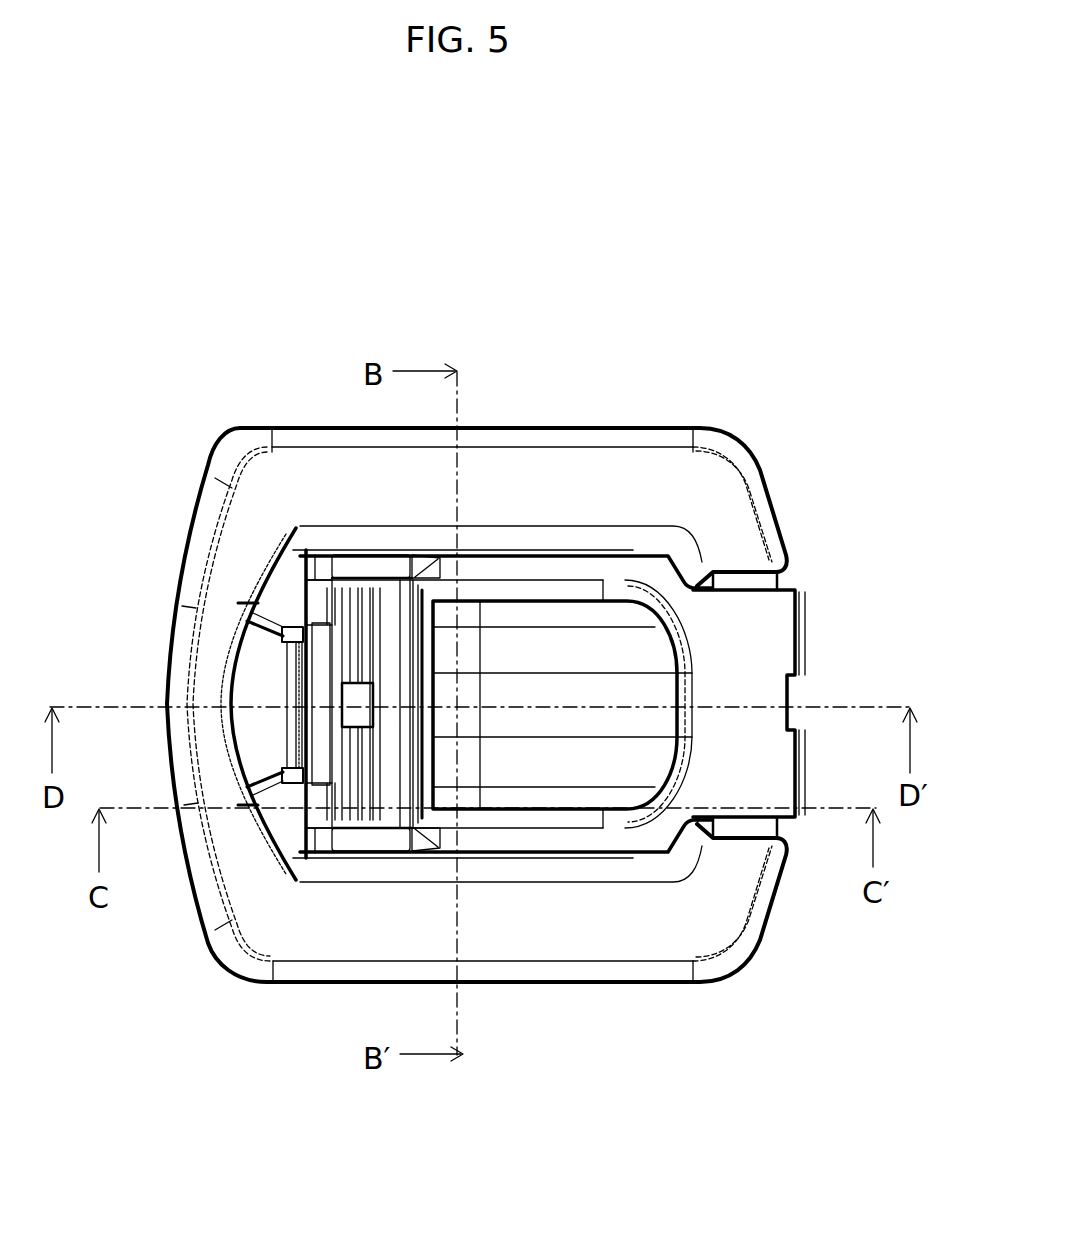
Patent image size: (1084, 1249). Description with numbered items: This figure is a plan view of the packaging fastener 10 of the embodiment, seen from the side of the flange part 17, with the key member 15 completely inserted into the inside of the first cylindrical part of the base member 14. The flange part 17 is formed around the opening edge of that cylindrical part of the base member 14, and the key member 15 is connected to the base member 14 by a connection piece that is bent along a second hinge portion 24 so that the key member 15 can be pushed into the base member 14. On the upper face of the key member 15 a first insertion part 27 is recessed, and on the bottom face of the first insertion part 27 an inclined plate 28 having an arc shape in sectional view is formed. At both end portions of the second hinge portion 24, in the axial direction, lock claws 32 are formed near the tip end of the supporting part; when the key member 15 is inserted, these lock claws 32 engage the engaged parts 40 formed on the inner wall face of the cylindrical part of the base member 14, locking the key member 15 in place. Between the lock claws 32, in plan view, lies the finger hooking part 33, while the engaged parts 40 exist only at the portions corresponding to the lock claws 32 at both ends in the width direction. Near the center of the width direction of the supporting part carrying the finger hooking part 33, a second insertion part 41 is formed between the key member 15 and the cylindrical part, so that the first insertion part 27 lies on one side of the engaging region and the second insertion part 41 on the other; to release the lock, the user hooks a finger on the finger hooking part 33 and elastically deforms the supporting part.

The packaging fastener 10 is at (833, 477).
The base member 14 is at (777, 950).
The key member 15 is at (567, 573).
The flange part 17 is at (323, 933).
The second hinge portion 24 is at (808, 651).
The first insertion part 27 is at (545, 765).
The inclined plate 28 is at (600, 765).
The lock claws 32 is at (317, 590).
The finger hooking part 33 is at (290, 670).
The engaged parts 40 is at (277, 583).
The second insertion part 41 is at (256, 690).